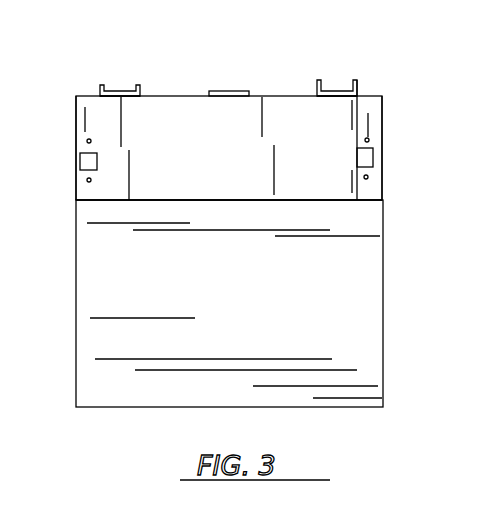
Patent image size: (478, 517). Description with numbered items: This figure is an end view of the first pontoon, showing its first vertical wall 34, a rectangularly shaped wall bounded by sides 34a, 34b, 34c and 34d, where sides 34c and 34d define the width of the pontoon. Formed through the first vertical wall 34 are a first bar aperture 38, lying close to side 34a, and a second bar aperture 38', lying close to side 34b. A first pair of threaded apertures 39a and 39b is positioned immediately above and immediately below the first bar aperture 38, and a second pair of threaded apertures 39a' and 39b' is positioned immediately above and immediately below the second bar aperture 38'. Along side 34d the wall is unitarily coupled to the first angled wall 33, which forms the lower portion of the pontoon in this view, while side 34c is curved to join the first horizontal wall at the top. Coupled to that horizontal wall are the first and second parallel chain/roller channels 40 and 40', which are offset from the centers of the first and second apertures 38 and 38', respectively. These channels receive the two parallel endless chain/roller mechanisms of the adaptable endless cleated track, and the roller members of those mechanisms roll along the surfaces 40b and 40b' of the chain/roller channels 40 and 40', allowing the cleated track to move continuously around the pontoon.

The first angled wall 33 is at (360, 293).
The first vertical wall 34 is at (363, 108).
The side 34a is at (375, 152).
The side 34b is at (75, 202).
The side 34c is at (201, 96).
The side 34d is at (203, 200).
The first bar aperture 38 is at (335, 154).
The second bar aperture 38' is at (135, 155).
The threaded aperture 39a is at (332, 124).
The threaded aperture 39a' is at (142, 124).
The threaded aperture 39b is at (331, 189).
The threaded aperture 39b' is at (143, 189).
The first chain/roller channel 40 is at (349, 56).
The second chain/roller channel 40' is at (124, 49).
The surface 40b is at (372, 64).
The surface 40b' is at (159, 59).